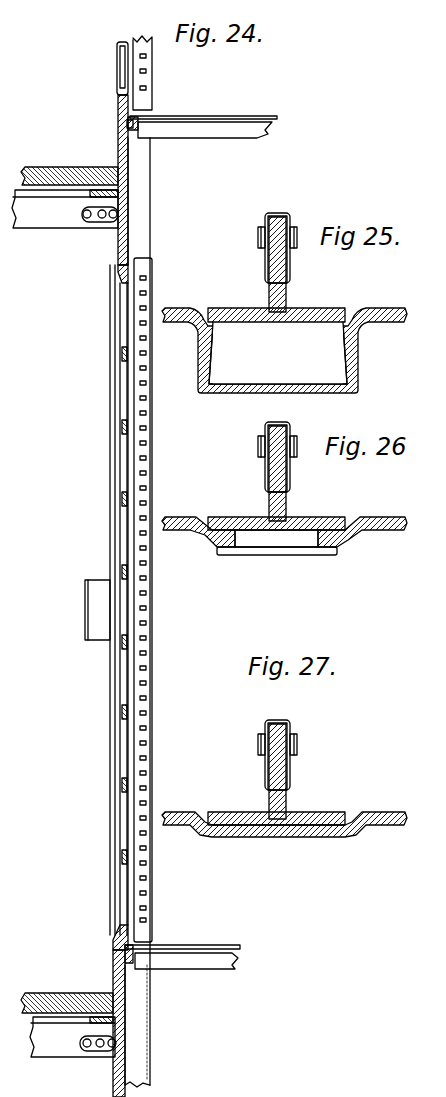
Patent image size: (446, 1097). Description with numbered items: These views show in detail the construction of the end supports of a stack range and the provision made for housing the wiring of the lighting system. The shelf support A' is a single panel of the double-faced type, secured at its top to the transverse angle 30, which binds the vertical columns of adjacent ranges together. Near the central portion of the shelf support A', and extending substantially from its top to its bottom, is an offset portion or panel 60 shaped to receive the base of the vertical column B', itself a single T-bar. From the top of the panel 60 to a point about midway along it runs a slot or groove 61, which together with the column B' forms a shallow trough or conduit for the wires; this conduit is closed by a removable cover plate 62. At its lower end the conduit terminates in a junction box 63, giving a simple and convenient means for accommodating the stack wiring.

In FIG. 24, the angle 30 is at (122, 197).
In FIG. 24, the junction box 63 is at (100, 632).
In FIG. 25, the junction box 63 is at (278, 353).
In FIG. 25, the offset portion or panel 60 is at (355, 332).
In FIG. 26, the offset portion or panel 60 is at (222, 545).
In FIG. 27, the offset portion or panel 60 is at (307, 834).
In FIG. 26, the slot or groove 61 is at (300, 543).
In FIG. 26, the removable cover plate 62 is at (258, 556).
In FIG. 24, the shelf support A' is at (95, 600).
In FIG. 24, the vertical column B' is at (155, 605).
In FIG. 25, the vertical column B' is at (276, 267).
In FIG. 27, the vertical column B' is at (276, 772).